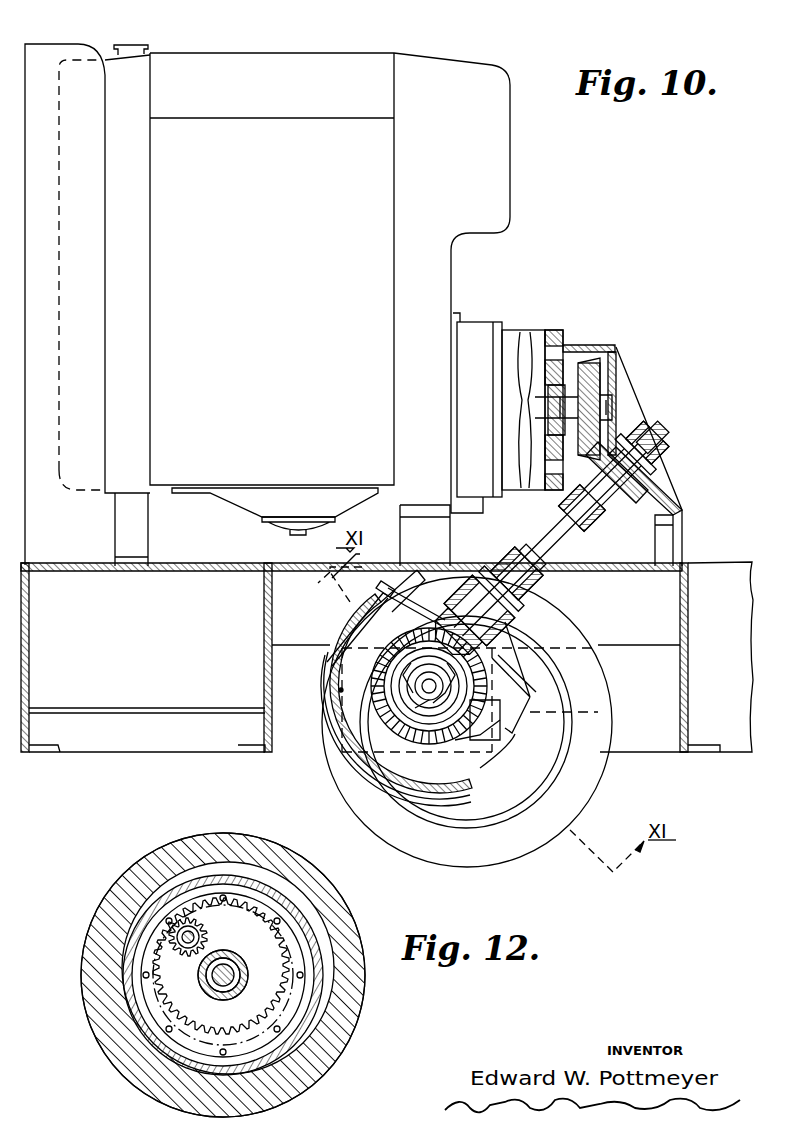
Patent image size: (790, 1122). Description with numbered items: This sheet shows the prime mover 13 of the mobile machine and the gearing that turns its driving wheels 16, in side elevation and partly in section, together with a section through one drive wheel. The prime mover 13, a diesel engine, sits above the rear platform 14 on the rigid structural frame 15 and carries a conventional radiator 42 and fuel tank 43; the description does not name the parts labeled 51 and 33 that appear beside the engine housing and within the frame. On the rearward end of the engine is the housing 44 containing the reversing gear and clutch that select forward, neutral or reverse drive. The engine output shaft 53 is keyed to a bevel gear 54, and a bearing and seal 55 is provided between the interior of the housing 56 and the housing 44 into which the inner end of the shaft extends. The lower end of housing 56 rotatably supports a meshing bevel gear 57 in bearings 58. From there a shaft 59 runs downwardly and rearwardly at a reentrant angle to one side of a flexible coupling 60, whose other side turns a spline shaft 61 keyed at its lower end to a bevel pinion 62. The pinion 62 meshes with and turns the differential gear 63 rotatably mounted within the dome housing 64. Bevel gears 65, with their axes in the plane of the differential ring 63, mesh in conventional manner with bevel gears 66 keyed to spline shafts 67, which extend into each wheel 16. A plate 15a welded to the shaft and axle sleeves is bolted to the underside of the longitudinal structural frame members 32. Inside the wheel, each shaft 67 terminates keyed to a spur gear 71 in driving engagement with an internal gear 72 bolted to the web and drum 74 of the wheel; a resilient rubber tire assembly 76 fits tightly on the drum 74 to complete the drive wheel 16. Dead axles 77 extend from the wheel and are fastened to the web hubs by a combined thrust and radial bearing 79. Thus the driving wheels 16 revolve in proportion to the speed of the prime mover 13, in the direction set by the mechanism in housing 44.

In FIG. 10, the prime mover 13 is at (262, 217).
In FIG. 10, the rear platform 14 is at (196, 566).
In FIG. 10, the rigid structural frame 15 is at (28, 640).
In FIG. 10, the plate 15a is at (568, 712).
In FIG. 10, the driving wheels 16 is at (598, 776).
In FIG. 12, the driving wheels 16 is at (266, 852).
In FIG. 10, the longitudinal structural frame members 32 is at (612, 650).
In FIG. 10, the frame partition wall 33 is at (266, 616).
In FIG. 10, the radiator 42 is at (112, 72).
In FIG. 10, the fuel tank 43 is at (213, 72).
In FIG. 10, the housing 44 is at (520, 348).
In FIG. 10, the side housing 51 is at (45, 66).
In FIG. 10, the output shaft 53 is at (566, 346).
In FIG. 10, the bevel gear 54 is at (590, 378).
In FIG. 10, the bearing and seal 55 is at (560, 393).
In FIG. 10, the housing 56 is at (618, 400).
In FIG. 10, the meshing bevel gear 57 is at (655, 503).
In FIG. 10, the bearings 58 is at (650, 470).
In FIG. 10, the shaft 59 is at (586, 560).
In FIG. 10, the flexible coupling 60 is at (500, 556).
In FIG. 10, the spline shaft 61 is at (524, 622).
In FIG. 10, the bevel pinion 62 is at (520, 676).
In FIG. 10, the differential gear 63 is at (438, 742).
In FIG. 10, the dome housing 64 is at (432, 790).
In FIG. 10, the bevel gears 65 is at (391, 669).
In FIG. 10, the bevel gears 66 is at (395, 687).
In FIG. 12, the spline shafts 67 is at (190, 944).
In FIG. 12, the spur gear 71 is at (204, 940).
In FIG. 12, the internal gear 72 is at (170, 1018).
In FIG. 12, the drum 74 is at (118, 923).
In FIG. 12, the resilient rubber tire assembly 76 is at (162, 866).
In FIG. 12, the dead axles 77 is at (232, 967).
In FIG. 12, the combined thrust and radial bearing 79 is at (238, 974).